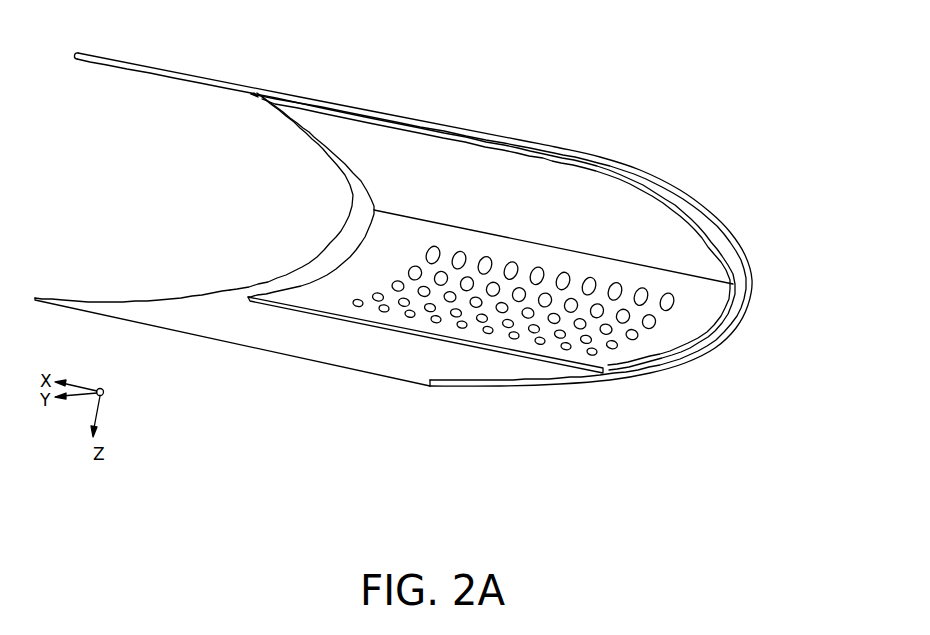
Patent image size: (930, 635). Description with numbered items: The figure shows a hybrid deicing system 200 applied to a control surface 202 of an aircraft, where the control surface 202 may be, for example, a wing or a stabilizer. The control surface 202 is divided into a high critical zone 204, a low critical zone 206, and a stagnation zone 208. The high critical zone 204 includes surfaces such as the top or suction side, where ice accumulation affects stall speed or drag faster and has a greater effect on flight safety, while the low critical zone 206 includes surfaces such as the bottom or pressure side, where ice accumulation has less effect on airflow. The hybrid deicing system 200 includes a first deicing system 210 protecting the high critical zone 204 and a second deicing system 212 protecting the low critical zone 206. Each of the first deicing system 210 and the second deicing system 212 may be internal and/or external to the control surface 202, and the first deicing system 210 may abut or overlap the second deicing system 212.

The hybrid deicing system 200 is at (90, 190).
The control surface 202 is at (255, 90).
The high critical zone 204 is at (716, 211).
The low critical zone 206 is at (724, 331).
The stagnation zone 208 is at (777, 288).
The first deicing system 210 is at (712, 259).
The second deicing system 212 is at (632, 363).